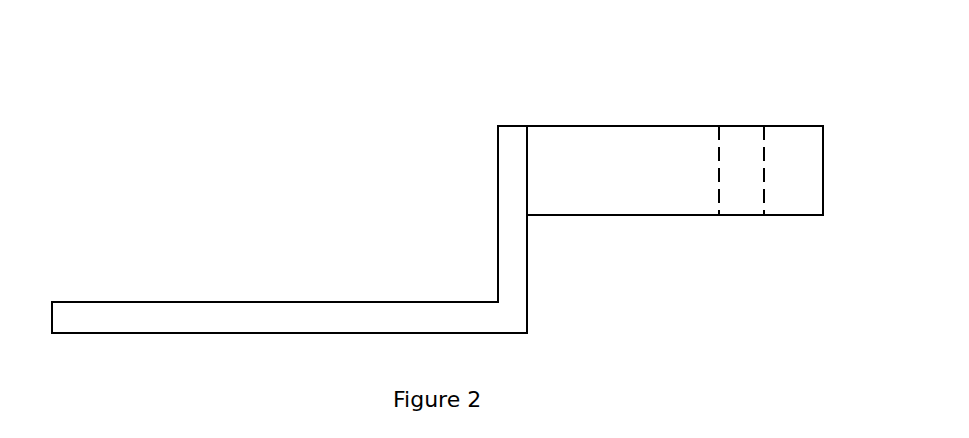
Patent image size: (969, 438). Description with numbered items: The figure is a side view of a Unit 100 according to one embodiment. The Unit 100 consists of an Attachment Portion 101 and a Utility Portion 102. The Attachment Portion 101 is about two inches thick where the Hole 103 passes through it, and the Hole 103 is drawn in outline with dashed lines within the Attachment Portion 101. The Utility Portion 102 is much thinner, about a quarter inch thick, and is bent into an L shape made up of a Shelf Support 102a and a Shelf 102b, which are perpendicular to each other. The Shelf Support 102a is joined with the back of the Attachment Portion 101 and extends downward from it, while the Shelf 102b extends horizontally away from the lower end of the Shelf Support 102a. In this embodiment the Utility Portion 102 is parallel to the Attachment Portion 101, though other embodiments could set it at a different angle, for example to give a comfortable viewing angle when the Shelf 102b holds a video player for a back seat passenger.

The unit 100 is at (389, 118).
The attachment portion 101 is at (675, 198).
The utility portion 102 is at (289, 229).
The shelf support 102a is at (516, 258).
The shelf 102b is at (275, 321).
The hole 103 is at (744, 162).